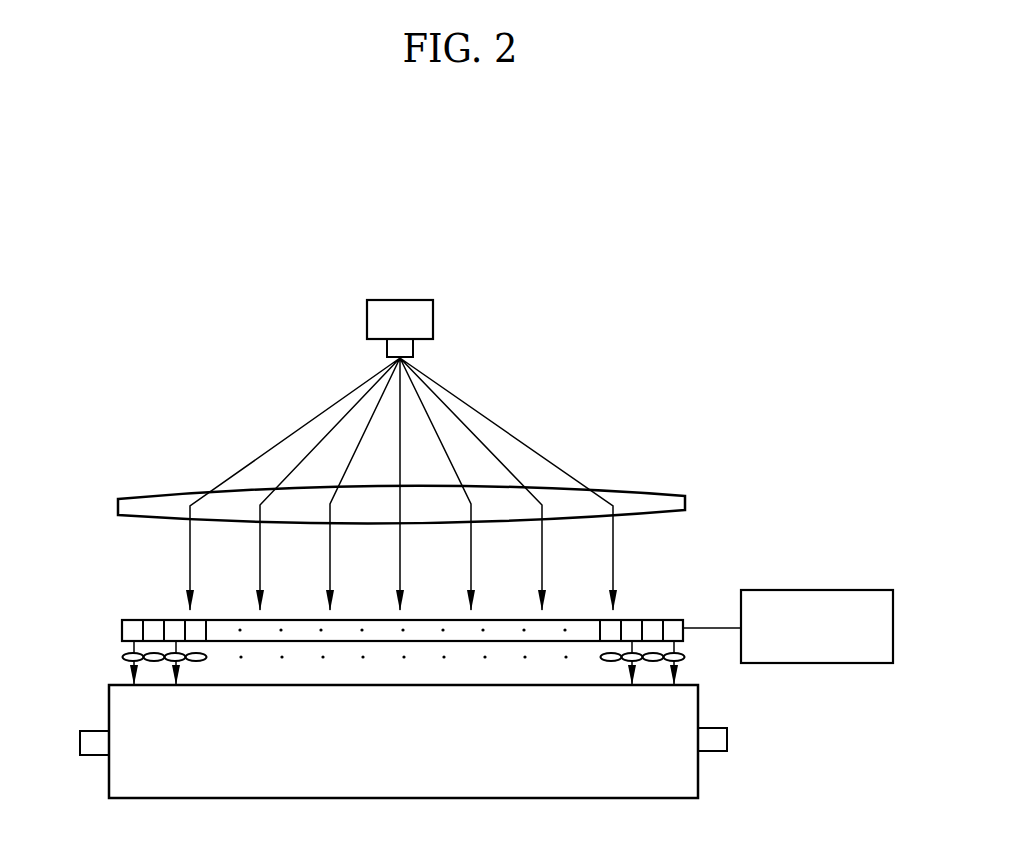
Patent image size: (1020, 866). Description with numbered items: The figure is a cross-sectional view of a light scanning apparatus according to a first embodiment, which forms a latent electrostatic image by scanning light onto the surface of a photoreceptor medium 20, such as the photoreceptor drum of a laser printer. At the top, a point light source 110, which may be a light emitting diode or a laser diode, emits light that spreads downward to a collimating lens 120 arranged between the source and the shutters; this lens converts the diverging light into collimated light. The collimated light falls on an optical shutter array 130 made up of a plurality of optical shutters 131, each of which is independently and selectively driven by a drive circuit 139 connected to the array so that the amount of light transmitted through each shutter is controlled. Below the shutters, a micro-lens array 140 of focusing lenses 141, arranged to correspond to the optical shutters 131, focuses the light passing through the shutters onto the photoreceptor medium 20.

The photoreceptor medium 20 is at (673, 747).
The point light source 110 is at (433, 321).
The collimating lens 120 is at (669, 503).
The optical shutter array 130 is at (423, 592).
The optical shutters 131 is at (153, 632).
The drive circuit 139 is at (823, 590).
The micro-lens array 140 is at (415, 741).
The focusing lenses 141 is at (125, 662).